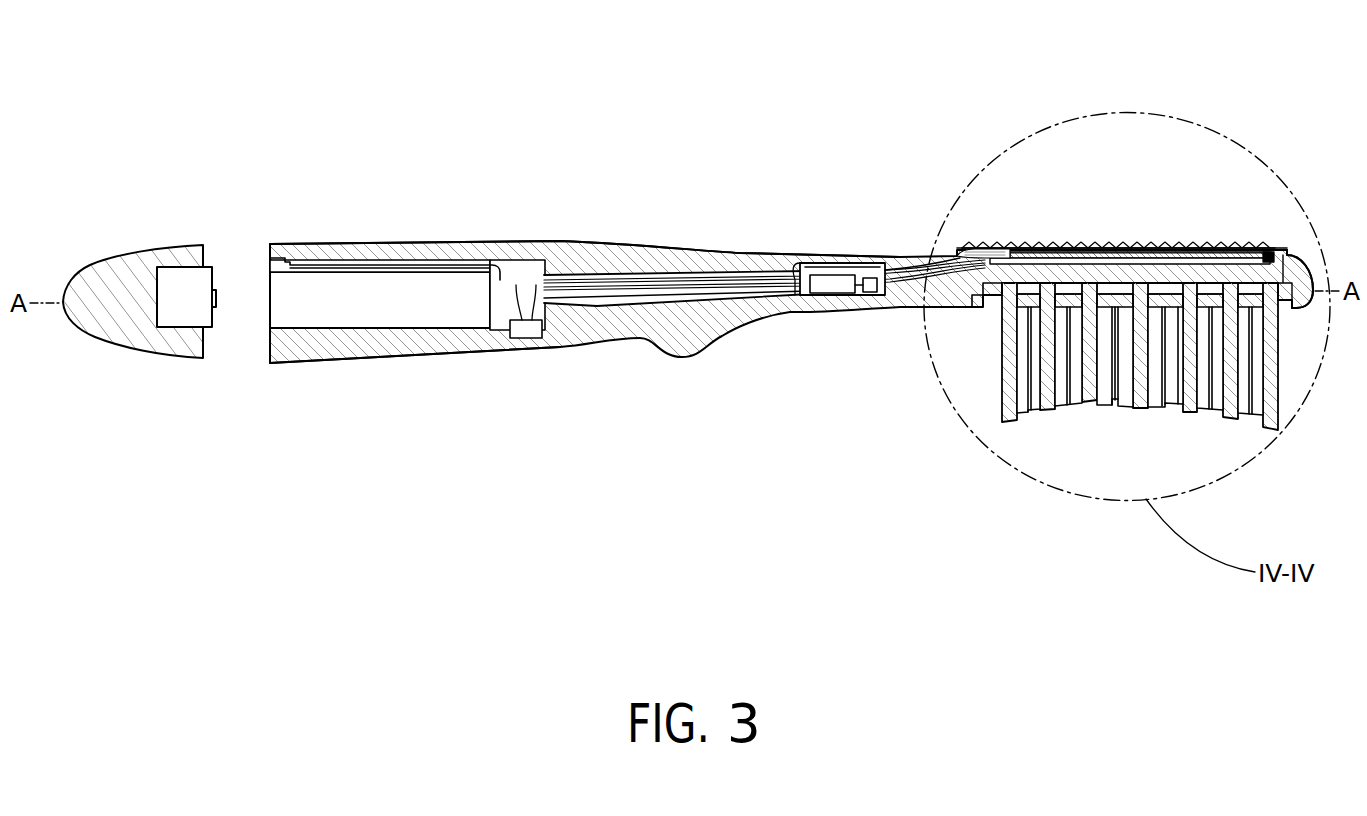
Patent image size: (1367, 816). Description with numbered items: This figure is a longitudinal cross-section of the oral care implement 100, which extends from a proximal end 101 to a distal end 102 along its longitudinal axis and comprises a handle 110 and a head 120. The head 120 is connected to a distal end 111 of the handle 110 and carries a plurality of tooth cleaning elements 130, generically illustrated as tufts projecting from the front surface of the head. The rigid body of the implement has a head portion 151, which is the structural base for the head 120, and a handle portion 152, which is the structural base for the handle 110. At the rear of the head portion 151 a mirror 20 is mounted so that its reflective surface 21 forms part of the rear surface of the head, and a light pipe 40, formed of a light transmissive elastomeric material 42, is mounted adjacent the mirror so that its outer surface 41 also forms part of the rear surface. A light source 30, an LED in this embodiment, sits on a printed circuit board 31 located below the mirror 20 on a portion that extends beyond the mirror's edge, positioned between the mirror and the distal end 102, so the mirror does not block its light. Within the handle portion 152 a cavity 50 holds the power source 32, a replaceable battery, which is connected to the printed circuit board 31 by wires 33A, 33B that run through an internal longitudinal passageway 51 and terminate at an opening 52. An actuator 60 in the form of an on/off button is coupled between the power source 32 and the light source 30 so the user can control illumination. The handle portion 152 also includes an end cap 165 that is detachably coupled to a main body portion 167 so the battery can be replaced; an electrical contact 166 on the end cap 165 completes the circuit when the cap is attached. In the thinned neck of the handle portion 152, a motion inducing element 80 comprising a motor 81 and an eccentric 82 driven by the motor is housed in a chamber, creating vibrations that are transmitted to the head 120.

The oral care implement 100 is at (1300, 112).
The proximal end 101 is at (65, 312).
The distal end 102 is at (1315, 284).
The handle 110 is at (408, 240).
The distal end of the handle 111 is at (937, 262).
The head 120 is at (995, 312).
The tooth cleaning elements 130 is at (1082, 408).
The head portion 151 is at (1302, 272).
The handle portion 152 is at (572, 250).
The end cap 165 is at (158, 358).
The electrical contact 166 is at (214, 290).
The main body portion 167 is at (303, 350).
The mirror 20 is at (1120, 262).
The reflective surface 21 is at (1100, 250).
The light source 30 is at (1268, 250).
The printed circuit board 31 is at (1225, 258).
The power source 32 is at (365, 296).
The electrical wire 33A is at (690, 275).
The electrical wire 33B is at (595, 295).
The light pipe 40 is at (1276, 248).
The outer surface 41 is at (1005, 248).
The light transmissive elastomeric material 42 is at (1012, 258).
The cavity 50 is at (473, 250).
The internal longitudinal passageway 51 is at (640, 300).
The opening 52 is at (872, 262).
The actuator 60 is at (522, 340).
The motion inducing element 80 is at (848, 262).
The motor 81 is at (825, 283).
The eccentric 82 is at (868, 292).